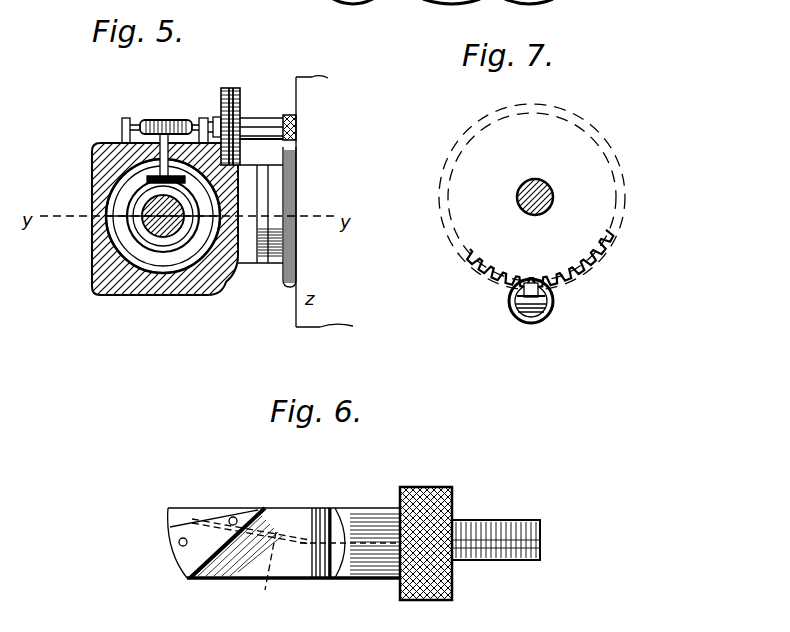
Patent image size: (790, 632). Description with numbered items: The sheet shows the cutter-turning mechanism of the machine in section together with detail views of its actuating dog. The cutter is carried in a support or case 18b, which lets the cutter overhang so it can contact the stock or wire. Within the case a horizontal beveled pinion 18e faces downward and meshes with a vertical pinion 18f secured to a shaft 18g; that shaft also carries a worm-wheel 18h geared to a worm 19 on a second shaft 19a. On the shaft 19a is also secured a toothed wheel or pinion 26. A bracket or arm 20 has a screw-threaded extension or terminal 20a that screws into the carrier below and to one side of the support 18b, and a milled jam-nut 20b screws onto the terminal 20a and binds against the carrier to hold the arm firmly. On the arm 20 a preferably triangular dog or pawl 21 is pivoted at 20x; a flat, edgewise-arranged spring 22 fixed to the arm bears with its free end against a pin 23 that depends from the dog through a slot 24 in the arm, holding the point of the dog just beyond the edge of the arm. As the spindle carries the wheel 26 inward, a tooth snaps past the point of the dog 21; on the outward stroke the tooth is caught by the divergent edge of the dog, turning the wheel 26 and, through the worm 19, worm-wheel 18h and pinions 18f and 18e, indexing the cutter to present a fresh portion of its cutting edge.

In FIG. 5, the support or case 18b is at (222, 289).
In FIG. 5, the horizontal beveled pinion 18e is at (137, 229).
In FIG. 5, the vertical pinion 18f is at (130, 187).
In FIG. 5, the shaft 18g is at (160, 160).
In FIG. 5, the worm-wheel 18h is at (165, 120).
In FIG. 5, the worm 19 is at (137, 118).
In FIG. 5, the shaft 19a is at (212, 125).
In FIG. 7, the shaft 19a is at (553, 197).
In FIG. 5, the bracket or arm 20 is at (267, 201).
In FIG. 6, the bracket or arm 20 is at (284, 531).
In FIG. 6, the screw-threaded extension or terminal 20a is at (530, 506).
In FIG. 7, the milled jam-nut 20b is at (535, 324).
In FIG. 6, the milled jam-nut 20b is at (402, 598).
In FIG. 6, the pivot 20x is at (179, 542).
In FIG. 7, the dog or pawl 21 is at (548, 297).
In FIG. 6, the dog or pawl 21 is at (208, 520).
In FIG. 6, the spring 22 is at (268, 577).
In FIG. 6, the pin 23 is at (235, 518).
In FIG. 6, the slot 24 is at (236, 578).
In FIG. 5, the toothed wheel or pinion 26 is at (241, 110).
In FIG. 7, the toothed wheel or pinion 26 is at (532, 197).